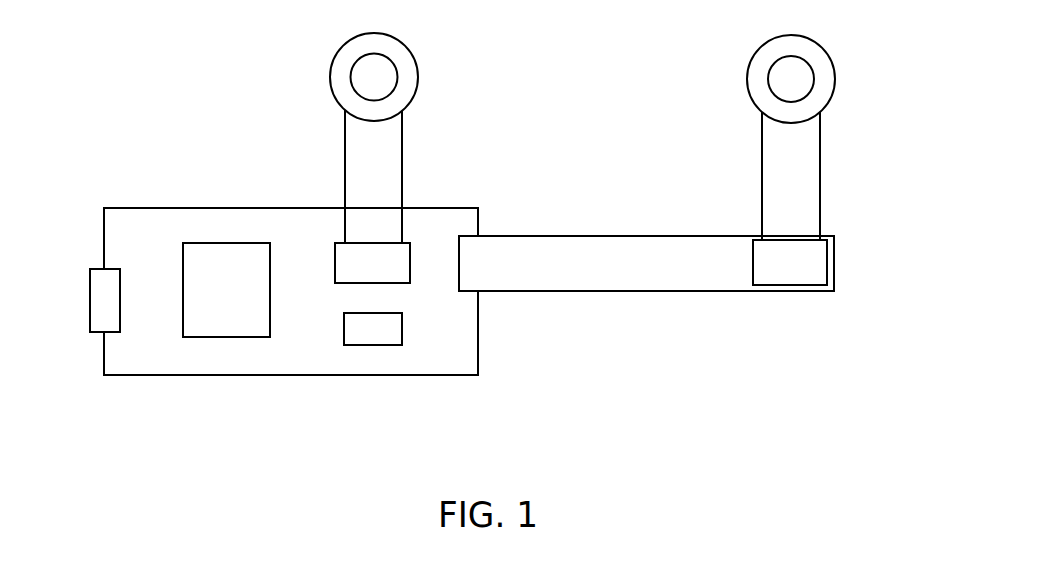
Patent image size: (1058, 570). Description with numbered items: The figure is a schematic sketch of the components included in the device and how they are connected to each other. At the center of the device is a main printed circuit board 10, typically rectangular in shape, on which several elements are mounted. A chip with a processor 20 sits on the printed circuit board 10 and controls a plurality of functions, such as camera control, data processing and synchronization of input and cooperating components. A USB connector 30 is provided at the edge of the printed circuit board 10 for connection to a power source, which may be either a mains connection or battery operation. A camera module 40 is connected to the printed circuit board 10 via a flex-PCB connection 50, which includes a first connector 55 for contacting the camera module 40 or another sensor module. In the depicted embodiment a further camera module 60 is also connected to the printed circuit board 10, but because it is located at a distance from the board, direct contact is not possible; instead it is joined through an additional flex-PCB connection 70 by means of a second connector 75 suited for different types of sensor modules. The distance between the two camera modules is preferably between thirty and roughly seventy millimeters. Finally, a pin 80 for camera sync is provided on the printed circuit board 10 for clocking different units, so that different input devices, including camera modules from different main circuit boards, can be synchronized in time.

The printed circuit board 10 is at (159, 365).
The processor 20 is at (235, 322).
The USB connector 30 is at (100, 299).
The camera module 40 is at (398, 78).
The flex-PCB connection 50 is at (388, 153).
The first connector 55 is at (400, 270).
The further camera module 60 is at (762, 60).
The additional flex-PCB connection 70 is at (703, 280).
The second connector 75 is at (812, 258).
The pin 80 is at (373, 325).